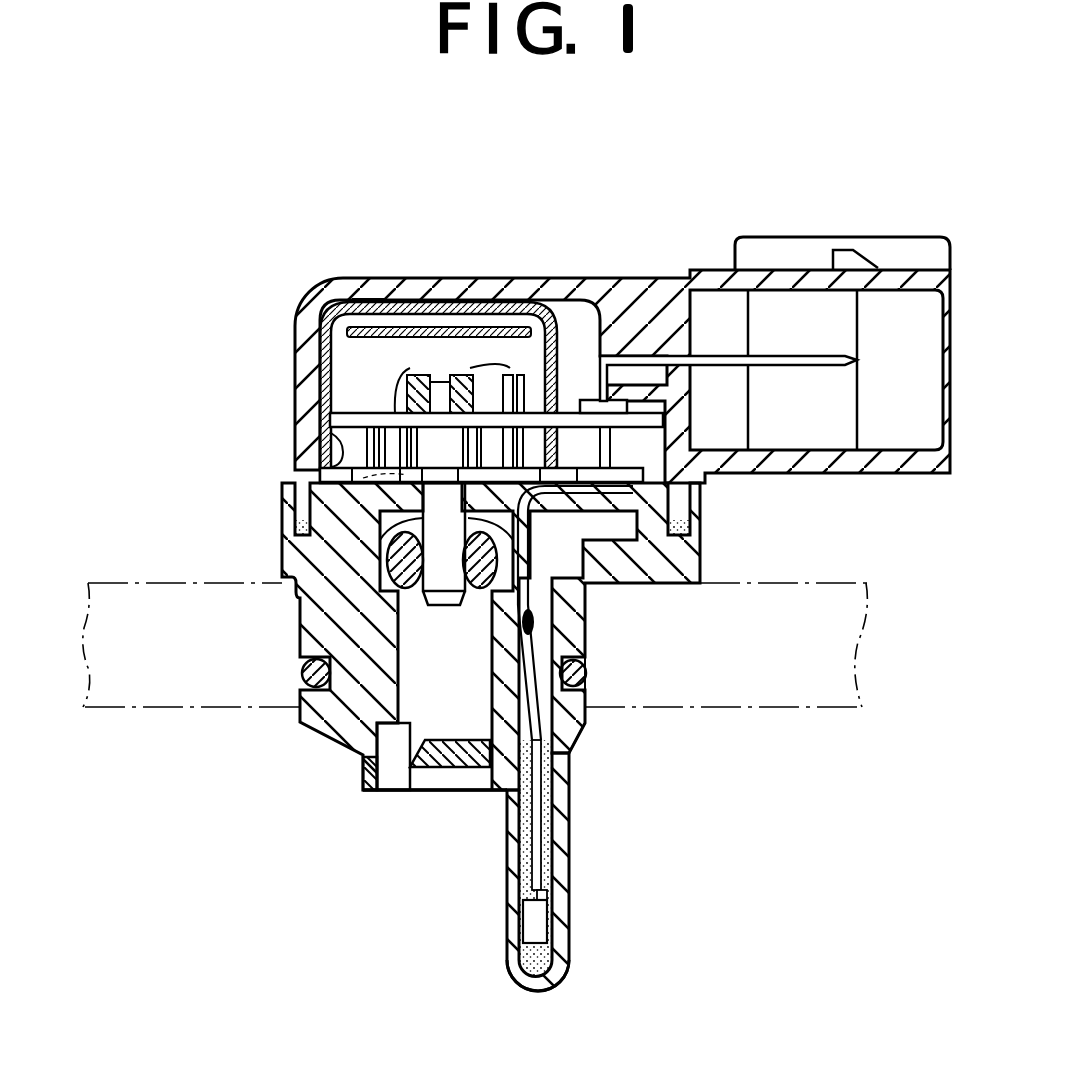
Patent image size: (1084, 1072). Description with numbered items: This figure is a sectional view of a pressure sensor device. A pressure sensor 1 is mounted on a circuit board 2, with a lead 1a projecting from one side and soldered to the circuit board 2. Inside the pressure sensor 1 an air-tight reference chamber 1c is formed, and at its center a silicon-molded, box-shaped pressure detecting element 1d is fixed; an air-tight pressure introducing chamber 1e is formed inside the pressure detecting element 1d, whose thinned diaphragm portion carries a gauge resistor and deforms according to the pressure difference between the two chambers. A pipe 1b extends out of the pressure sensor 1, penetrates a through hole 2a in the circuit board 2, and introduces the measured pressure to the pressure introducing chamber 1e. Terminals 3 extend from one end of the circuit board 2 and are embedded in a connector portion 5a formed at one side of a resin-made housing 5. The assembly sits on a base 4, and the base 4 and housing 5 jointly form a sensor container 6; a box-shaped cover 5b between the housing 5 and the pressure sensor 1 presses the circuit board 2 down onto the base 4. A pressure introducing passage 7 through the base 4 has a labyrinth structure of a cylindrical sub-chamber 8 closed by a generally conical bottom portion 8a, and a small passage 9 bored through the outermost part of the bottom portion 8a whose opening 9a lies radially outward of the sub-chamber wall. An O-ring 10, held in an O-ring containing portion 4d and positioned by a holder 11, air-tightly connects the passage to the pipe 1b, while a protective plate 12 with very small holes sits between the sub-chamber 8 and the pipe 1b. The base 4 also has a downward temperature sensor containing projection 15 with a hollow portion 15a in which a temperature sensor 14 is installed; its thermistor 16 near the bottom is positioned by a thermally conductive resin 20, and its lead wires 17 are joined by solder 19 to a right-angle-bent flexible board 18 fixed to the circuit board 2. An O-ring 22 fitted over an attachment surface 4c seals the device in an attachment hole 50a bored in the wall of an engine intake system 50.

The pressure sensor 1 is at (516, 591).
The lead 1a is at (300, 406).
The pipe 1b is at (358, 592).
The reference chamber 1c is at (456, 352).
The pressure detecting element 1d is at (490, 400).
The pressure introducing chamber 1e is at (412, 400).
The circuit board 2 is at (322, 436).
The through hole 2a is at (300, 471).
The terminals 3 is at (802, 366).
The base 4 is at (436, 698).
The attachment surface 4c is at (633, 660).
The O-ring containing portion 4d is at (301, 652).
The housing 5 is at (561, 332).
The connector portion 5a is at (810, 268).
The cover 5b is at (437, 302).
The sensor container 6 is at (539, 542).
The pressure introducing passage 7 is at (417, 818).
The sub-chamber 8 is at (397, 760).
The bottom portion 8a is at (467, 762).
The small passage 9 is at (405, 760).
The opening 9a is at (380, 778).
The O-ring 10 is at (400, 566).
The holder 11 is at (373, 508).
The protective plate 12 is at (420, 605).
The temperature sensor 14 is at (545, 925).
The temperature sensor containing projection 15 is at (560, 833).
The hollow portion 15a is at (548, 790).
The thermistor 16 is at (568, 970).
The lead wires 17 is at (540, 866).
The flexible board 18 is at (585, 617).
The solder 19 is at (580, 640).
The resin 20 is at (548, 895).
The O-ring 22 is at (588, 673).
The engine intake system 50 is at (478, 674).
The attachment hole 50a is at (586, 728).